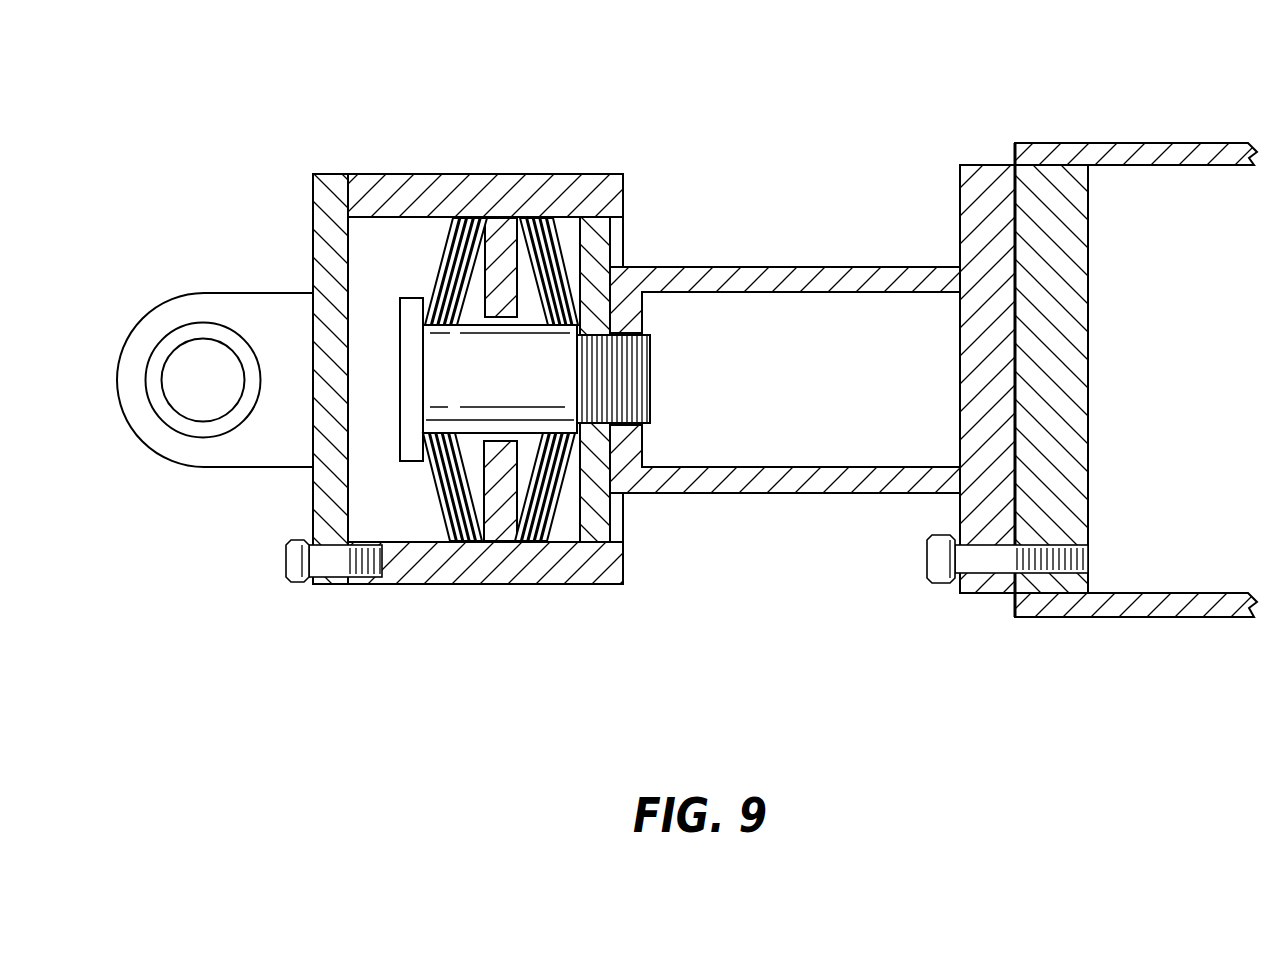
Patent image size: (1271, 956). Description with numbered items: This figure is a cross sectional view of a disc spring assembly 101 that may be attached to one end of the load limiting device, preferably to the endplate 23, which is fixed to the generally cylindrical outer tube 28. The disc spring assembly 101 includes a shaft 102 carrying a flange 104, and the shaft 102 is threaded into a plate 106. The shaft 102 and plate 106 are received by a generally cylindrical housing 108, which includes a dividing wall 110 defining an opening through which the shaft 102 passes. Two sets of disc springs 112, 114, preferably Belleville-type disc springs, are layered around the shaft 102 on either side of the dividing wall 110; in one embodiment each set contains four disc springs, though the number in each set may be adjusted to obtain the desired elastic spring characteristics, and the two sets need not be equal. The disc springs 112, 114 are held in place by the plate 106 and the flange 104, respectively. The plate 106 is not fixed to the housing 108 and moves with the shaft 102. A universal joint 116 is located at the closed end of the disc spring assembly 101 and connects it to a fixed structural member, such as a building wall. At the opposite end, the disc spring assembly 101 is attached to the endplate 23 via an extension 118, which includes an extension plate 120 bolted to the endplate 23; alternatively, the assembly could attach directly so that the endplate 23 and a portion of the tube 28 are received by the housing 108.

The disc spring assembly 101 is at (922, 97).
The shaft 102 is at (477, 413).
The flange 104 is at (407, 448).
The plate 106 is at (600, 250).
The housing 108 is at (378, 188).
The dividing wall 110 is at (502, 248).
The disc springs 112 is at (447, 242).
The disc springs 114 is at (563, 247).
The universal joint 116 is at (180, 307).
The extension 118 is at (797, 487).
The extension plate 120 is at (962, 510).
The endplate 23 is at (1078, 338).
The outer tube 28 is at (1163, 143).